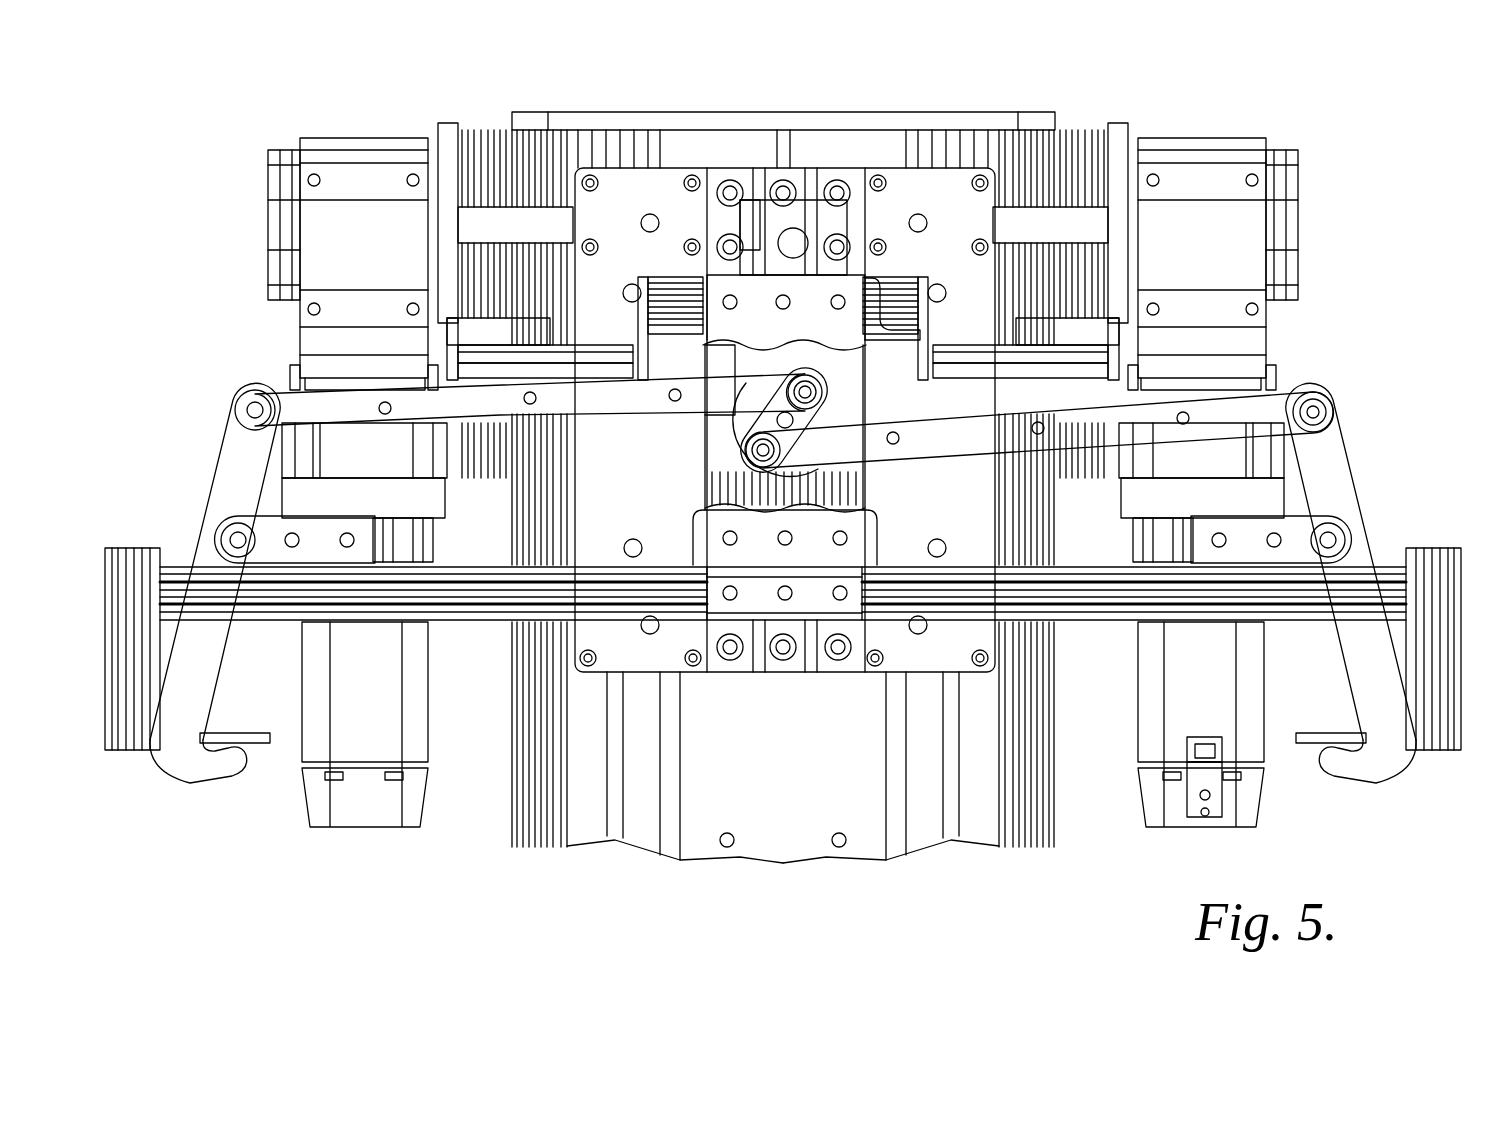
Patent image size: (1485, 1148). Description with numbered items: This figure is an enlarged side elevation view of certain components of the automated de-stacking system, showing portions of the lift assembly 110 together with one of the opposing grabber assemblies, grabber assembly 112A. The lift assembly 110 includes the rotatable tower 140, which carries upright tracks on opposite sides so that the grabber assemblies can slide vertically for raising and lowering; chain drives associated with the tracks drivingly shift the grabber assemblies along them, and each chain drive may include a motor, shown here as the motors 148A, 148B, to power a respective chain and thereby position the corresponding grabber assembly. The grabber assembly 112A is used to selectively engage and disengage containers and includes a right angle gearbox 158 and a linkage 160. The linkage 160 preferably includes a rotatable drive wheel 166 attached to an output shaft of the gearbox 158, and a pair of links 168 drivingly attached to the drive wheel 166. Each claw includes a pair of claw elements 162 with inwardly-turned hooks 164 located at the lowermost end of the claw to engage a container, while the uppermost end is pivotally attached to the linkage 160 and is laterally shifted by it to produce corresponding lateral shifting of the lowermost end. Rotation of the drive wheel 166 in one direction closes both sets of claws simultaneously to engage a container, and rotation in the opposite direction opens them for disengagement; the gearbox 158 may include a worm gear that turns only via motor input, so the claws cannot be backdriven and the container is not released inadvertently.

The lift assembly 110 is at (708, 88).
The rotatable tower 140 is at (574, 110).
The motor 148A is at (332, 132).
The motor 148B is at (1212, 130).
The grabber assembly 112A is at (1340, 302).
The linkage 160 is at (1228, 377).
The links 168 is at (285, 402).
The right angle gearbox 158 is at (822, 355).
The drive wheel 166 is at (832, 417).
The claw elements 162 is at (233, 480).
The hooks 164 is at (202, 776).